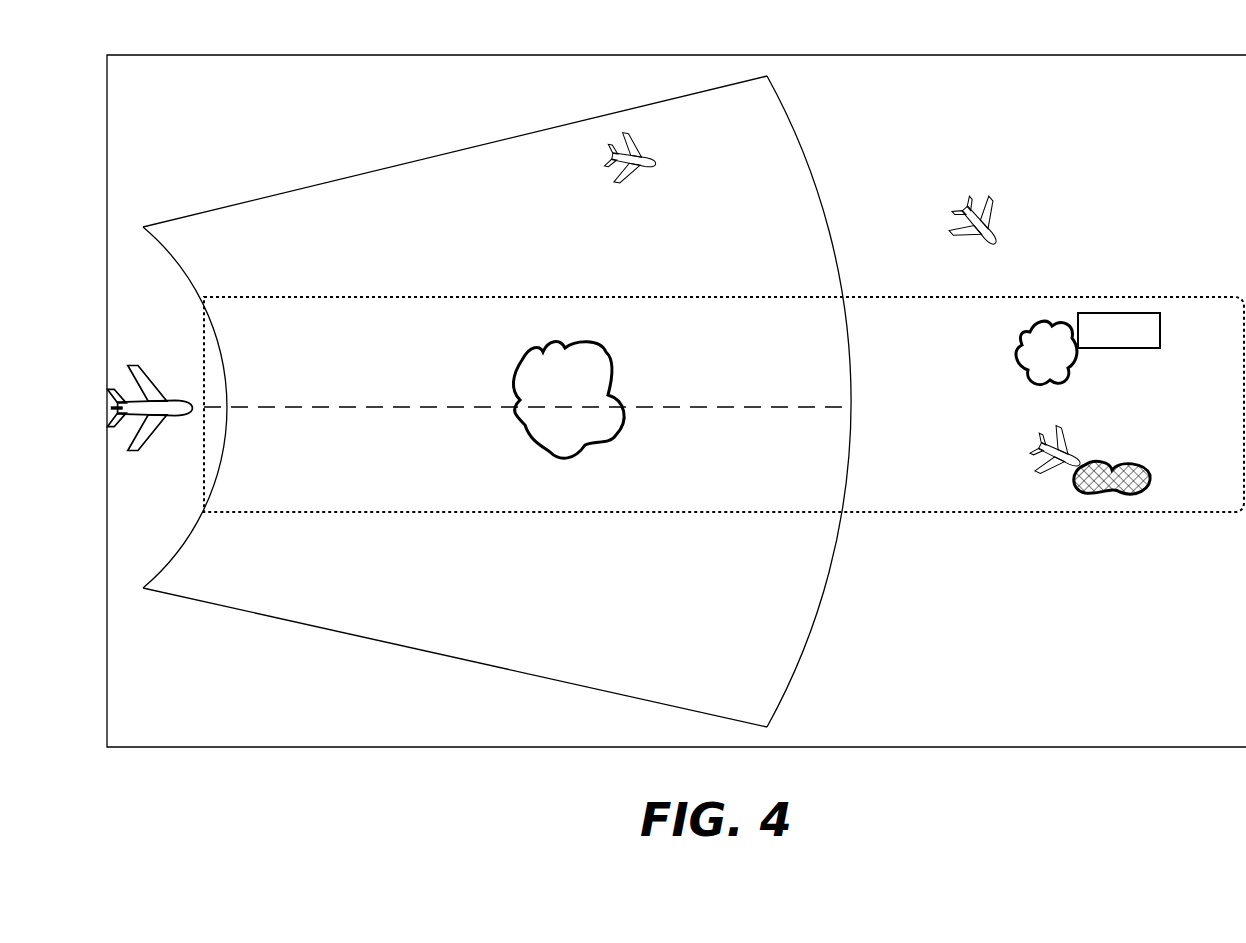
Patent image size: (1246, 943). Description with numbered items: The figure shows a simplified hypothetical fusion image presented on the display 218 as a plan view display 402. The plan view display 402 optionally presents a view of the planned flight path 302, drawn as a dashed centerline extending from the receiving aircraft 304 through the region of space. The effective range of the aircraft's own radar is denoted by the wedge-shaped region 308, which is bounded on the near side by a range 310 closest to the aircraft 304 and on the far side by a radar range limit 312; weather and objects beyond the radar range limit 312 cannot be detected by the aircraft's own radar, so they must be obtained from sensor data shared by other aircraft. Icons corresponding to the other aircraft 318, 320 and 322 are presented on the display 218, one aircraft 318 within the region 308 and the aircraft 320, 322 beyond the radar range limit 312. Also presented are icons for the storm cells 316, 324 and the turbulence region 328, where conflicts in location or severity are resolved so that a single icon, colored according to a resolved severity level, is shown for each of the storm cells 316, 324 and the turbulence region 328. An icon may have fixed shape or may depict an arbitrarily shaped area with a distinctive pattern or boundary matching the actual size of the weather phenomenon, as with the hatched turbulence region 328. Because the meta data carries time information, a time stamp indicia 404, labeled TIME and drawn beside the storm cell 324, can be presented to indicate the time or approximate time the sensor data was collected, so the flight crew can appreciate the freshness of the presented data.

The display 218 is at (245, 748).
The planned flight path 302 is at (266, 408).
The aircraft 304 is at (140, 452).
The region 308 is at (510, 401).
The range closest to the aircraft 310 is at (185, 253).
The radar range limit 312 is at (823, 660).
The storm cell 316 is at (638, 441).
The aircraft 318 is at (667, 158).
The aircraft 320 is at (1018, 231).
The aircraft 322 is at (1032, 457).
The storm cell 324 is at (1072, 387).
The turbulence region 328 is at (1105, 494).
The plan view display 402 is at (897, 772).
The time indicator 404 is at (1150, 352).